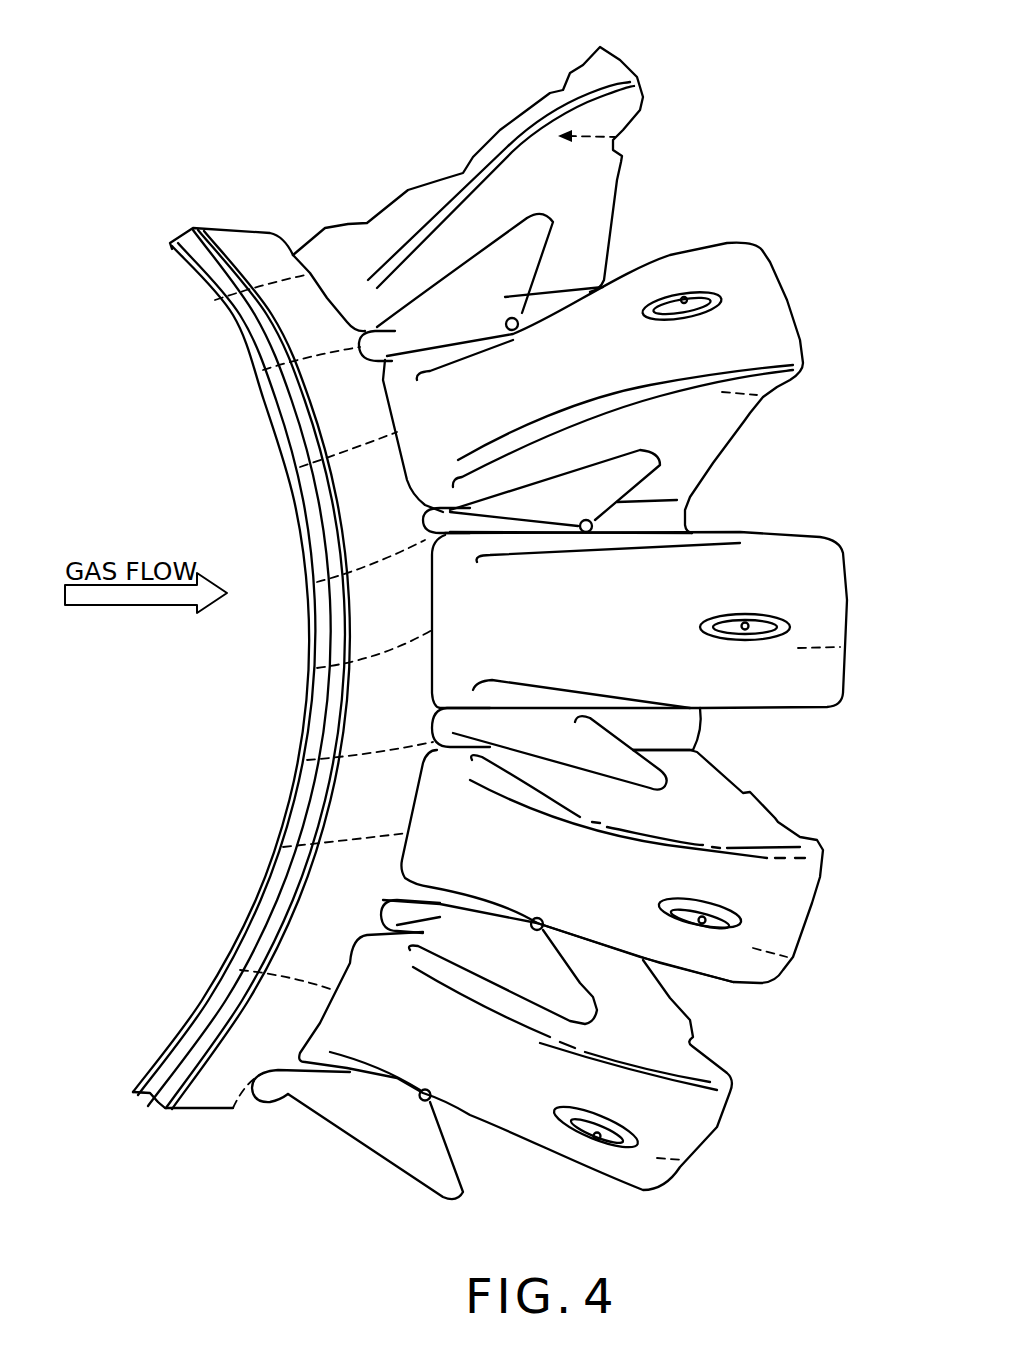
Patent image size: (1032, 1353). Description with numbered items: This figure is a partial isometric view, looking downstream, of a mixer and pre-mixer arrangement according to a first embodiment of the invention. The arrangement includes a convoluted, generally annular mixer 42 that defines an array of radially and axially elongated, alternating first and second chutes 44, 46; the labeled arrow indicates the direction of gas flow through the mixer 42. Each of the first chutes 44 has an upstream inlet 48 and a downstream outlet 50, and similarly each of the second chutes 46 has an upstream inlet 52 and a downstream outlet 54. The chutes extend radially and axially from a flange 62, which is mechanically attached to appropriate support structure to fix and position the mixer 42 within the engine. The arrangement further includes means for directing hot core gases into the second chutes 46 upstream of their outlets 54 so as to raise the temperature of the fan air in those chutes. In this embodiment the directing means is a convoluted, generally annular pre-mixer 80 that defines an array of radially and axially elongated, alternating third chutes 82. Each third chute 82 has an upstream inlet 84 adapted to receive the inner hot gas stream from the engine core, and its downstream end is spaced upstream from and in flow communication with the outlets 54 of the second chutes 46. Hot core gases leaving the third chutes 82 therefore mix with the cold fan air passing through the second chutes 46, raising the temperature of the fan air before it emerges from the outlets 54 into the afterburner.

The mixer 42 is at (792, 266).
The first chutes 44 is at (612, 57).
The second chutes 46 is at (560, 260).
The upstream inlet 48 is at (225, 297).
The downstream outlet 50 is at (617, 137).
The upstream inlet 52 is at (377, 297).
The downstream outlet 54 is at (660, 200).
The flange 62 is at (186, 1050).
The pre-mixer 80 is at (355, 370).
The third chutes 82 is at (532, 236).
The upstream inlet 84 is at (262, 370).